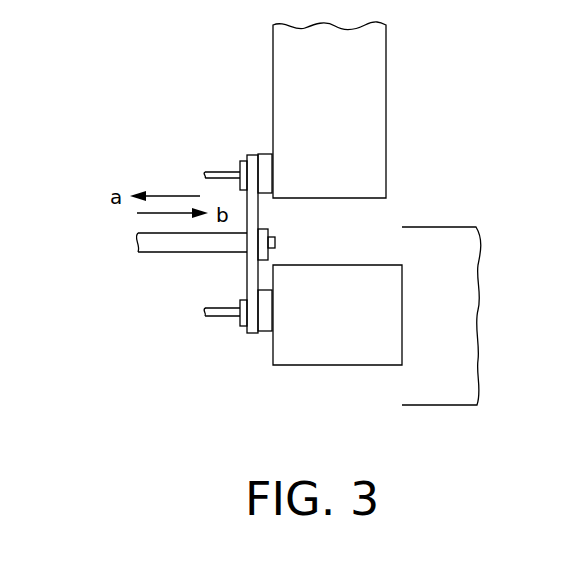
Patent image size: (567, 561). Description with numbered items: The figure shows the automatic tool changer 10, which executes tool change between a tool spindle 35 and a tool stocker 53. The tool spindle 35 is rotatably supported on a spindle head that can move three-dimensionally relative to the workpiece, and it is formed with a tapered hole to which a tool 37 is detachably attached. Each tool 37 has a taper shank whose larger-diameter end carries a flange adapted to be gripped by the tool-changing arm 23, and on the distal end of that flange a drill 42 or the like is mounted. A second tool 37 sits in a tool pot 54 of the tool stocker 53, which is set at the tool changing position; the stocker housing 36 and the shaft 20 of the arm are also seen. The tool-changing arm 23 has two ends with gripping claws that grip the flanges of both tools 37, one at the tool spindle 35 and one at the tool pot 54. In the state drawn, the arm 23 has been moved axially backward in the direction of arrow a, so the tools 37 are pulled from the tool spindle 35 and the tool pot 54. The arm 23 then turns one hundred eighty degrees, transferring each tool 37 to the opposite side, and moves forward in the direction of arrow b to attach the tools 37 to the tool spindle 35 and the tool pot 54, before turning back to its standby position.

The connection structure 10 is at (150, 275).
The shaft 20 is at (138, 238).
The tool-changing arm 23 is at (247, 275).
The tool spindle 35 is at (272, 331).
The lower housing 36 is at (337, 352).
The tool 37 is at (243, 160).
The drill 42 is at (220, 171).
The tool stocker 53 is at (370, 102).
The tool pot 54 is at (267, 154).